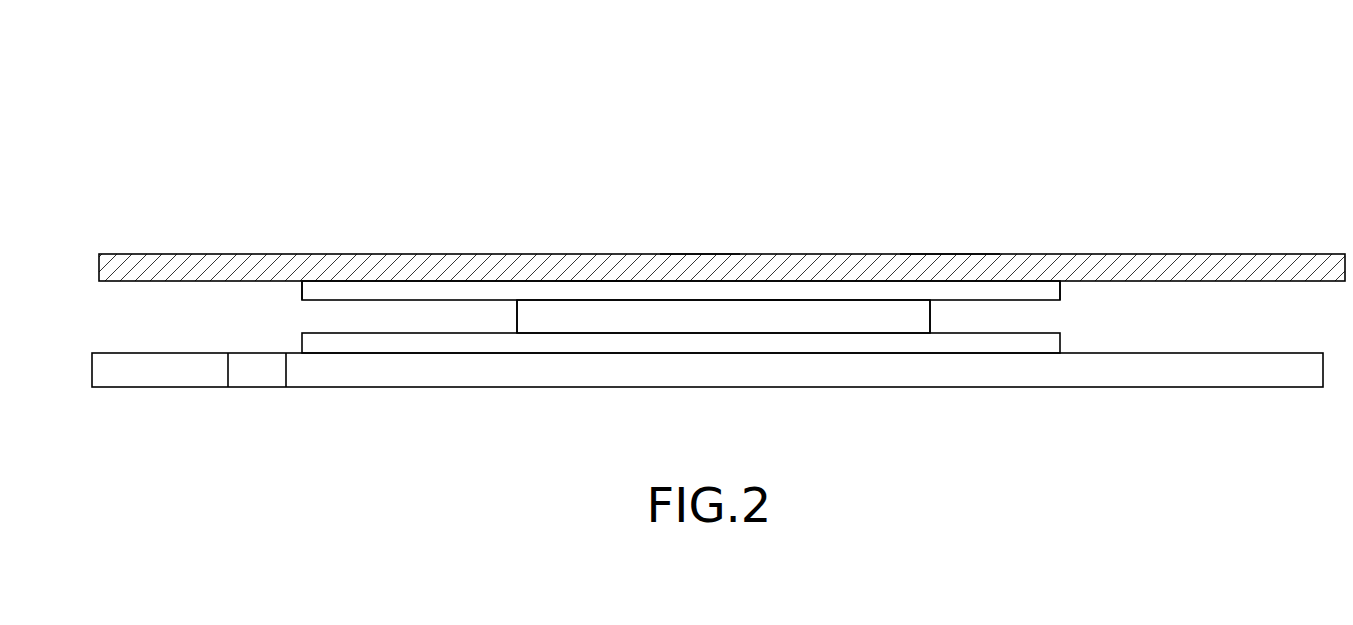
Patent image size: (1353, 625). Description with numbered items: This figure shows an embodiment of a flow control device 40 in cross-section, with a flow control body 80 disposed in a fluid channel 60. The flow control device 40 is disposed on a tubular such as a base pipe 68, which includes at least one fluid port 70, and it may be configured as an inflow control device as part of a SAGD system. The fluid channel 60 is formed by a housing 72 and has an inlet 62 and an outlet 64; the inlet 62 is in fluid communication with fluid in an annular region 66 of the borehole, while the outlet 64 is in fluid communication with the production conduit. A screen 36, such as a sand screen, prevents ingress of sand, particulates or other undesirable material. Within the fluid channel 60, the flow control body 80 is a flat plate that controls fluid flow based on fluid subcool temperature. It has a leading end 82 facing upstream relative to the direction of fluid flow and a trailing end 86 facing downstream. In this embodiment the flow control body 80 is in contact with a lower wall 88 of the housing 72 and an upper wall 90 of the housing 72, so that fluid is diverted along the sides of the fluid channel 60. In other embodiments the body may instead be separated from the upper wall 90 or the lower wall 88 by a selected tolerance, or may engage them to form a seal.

The screen 36 is at (1194, 258).
The flow control device 40 is at (952, 118).
The fluid channel 60 is at (376, 315).
The inlet 62 is at (1070, 308).
The outlet 64 is at (293, 300).
The annular region 66 is at (721, 196).
The base pipe 68 is at (1115, 363).
The fluid port 70 is at (254, 373).
The housing 72 is at (594, 258).
The flow control body 80 is at (808, 320).
The leading end 82 is at (930, 318).
The trailing end 86 is at (517, 318).
The lower wall 88 is at (612, 342).
The upper wall 90 is at (762, 292).